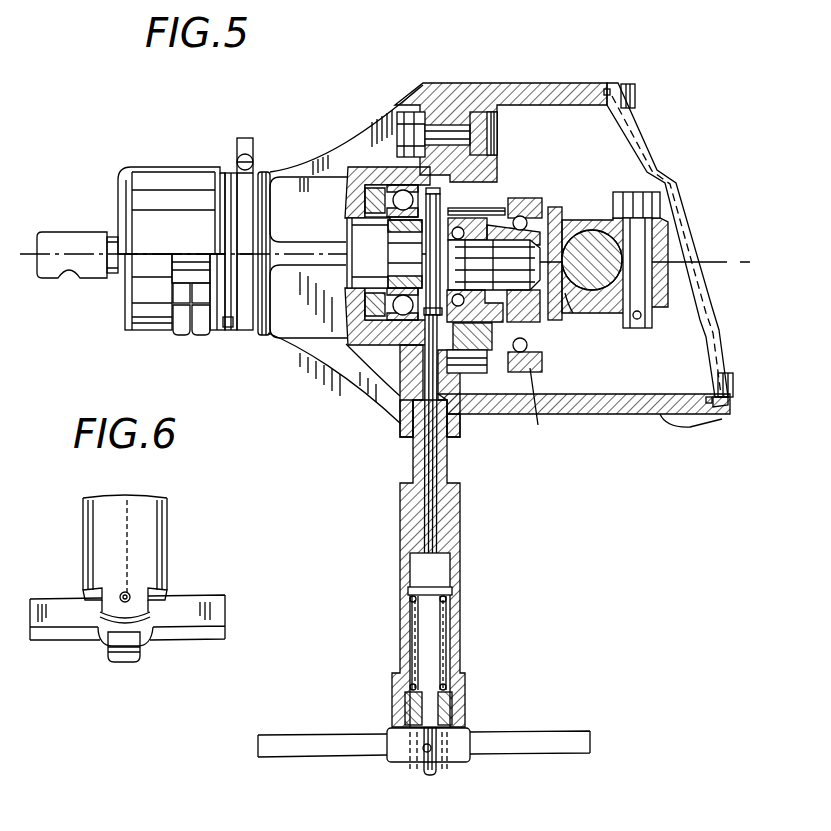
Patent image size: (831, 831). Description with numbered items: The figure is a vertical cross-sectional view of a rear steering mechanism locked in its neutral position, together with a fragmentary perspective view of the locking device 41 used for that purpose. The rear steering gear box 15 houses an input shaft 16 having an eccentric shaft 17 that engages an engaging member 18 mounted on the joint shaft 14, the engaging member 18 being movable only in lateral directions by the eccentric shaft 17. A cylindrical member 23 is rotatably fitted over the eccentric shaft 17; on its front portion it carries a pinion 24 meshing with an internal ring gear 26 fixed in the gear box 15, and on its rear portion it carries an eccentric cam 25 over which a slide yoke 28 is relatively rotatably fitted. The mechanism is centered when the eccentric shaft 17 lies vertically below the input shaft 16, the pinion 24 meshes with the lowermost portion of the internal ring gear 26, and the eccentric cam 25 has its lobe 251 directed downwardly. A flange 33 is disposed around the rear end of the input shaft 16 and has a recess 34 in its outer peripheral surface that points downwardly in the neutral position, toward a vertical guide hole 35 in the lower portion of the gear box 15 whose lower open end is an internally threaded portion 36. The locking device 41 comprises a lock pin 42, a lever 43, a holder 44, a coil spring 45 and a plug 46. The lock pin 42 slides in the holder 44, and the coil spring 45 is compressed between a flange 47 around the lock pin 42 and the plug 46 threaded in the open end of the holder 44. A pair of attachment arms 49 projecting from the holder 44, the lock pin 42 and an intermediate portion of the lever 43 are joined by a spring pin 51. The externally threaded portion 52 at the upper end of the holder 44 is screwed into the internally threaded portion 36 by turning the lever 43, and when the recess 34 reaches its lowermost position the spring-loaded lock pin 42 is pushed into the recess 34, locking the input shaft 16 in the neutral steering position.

In FIG. 5, the joint shaft 14 is at (592, 253).
In FIG. 5, the rear steering gear box 15 is at (487, 103).
In FIG. 5, the input shaft 16 is at (367, 238).
In FIG. 5, the eccentric shaft 17 is at (557, 290).
In FIG. 5, the engaging member 18 is at (565, 207).
In FIG. 5, the cylindrical member 23 is at (450, 227).
In FIG. 5, the pinion 24 is at (490, 207).
In FIG. 5, the eccentric cam 25 is at (528, 328).
In FIG. 5, the lobe 251 is at (532, 362).
In FIG. 5, the internal ring gear 26 is at (495, 187).
In FIG. 5, the slide yoke 28 is at (543, 409).
In FIG. 5, the flange 33 is at (382, 164).
In FIG. 5, the recess 34 is at (360, 356).
In FIG. 5, the guide hole 35 is at (398, 388).
In FIG. 5, the internally threaded portion 36 is at (453, 443).
In FIG. 5, the locking device 41 is at (473, 643).
In FIG. 5, the lock pin 42 is at (440, 510).
In FIG. 6, the lock pin 42 is at (125, 660).
In FIG. 5, the lever 43 is at (328, 748).
In FIG. 6, the lever 43 is at (185, 633).
In FIG. 5, the holder 44 is at (412, 538).
In FIG. 6, the holder 44 is at (102, 515).
In FIG. 5, the coil spring 45 is at (412, 638).
In FIG. 5, the plug 46 is at (443, 703).
In FIG. 5, the flange 47 is at (453, 593).
In FIG. 5, the attachment arms 49 is at (445, 760).
In FIG. 6, the attachment arms 49 is at (108, 608).
In FIG. 5, the spring pin 51 is at (425, 750).
In FIG. 6, the spring pin 51 is at (129, 592).
In FIG. 5, the externally threaded portion 52 is at (401, 424).